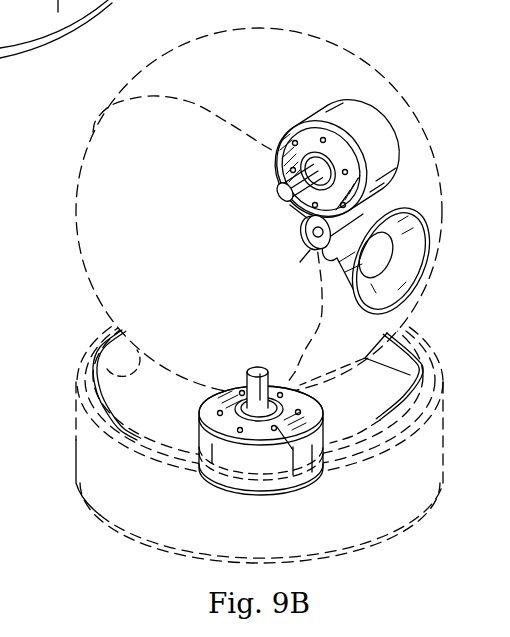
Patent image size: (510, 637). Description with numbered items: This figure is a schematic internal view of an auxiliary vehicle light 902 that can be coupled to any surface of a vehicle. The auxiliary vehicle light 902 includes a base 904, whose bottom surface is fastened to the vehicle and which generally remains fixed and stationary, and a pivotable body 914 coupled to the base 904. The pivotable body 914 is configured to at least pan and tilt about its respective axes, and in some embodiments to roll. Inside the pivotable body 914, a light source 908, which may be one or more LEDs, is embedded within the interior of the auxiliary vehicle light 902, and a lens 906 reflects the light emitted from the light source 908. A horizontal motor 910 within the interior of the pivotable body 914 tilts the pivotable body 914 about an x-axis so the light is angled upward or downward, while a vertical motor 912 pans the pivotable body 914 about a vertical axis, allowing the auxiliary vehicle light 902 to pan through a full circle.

The auxiliary vehicle light 902 is at (405, 56).
The base 904 is at (76, 455).
The lens 906 is at (412, 268).
The light source 908 is at (311, 251).
The horizontal motor 910 is at (318, 110).
The vertical motor 912 is at (203, 418).
The pivotable body 914 is at (100, 297).